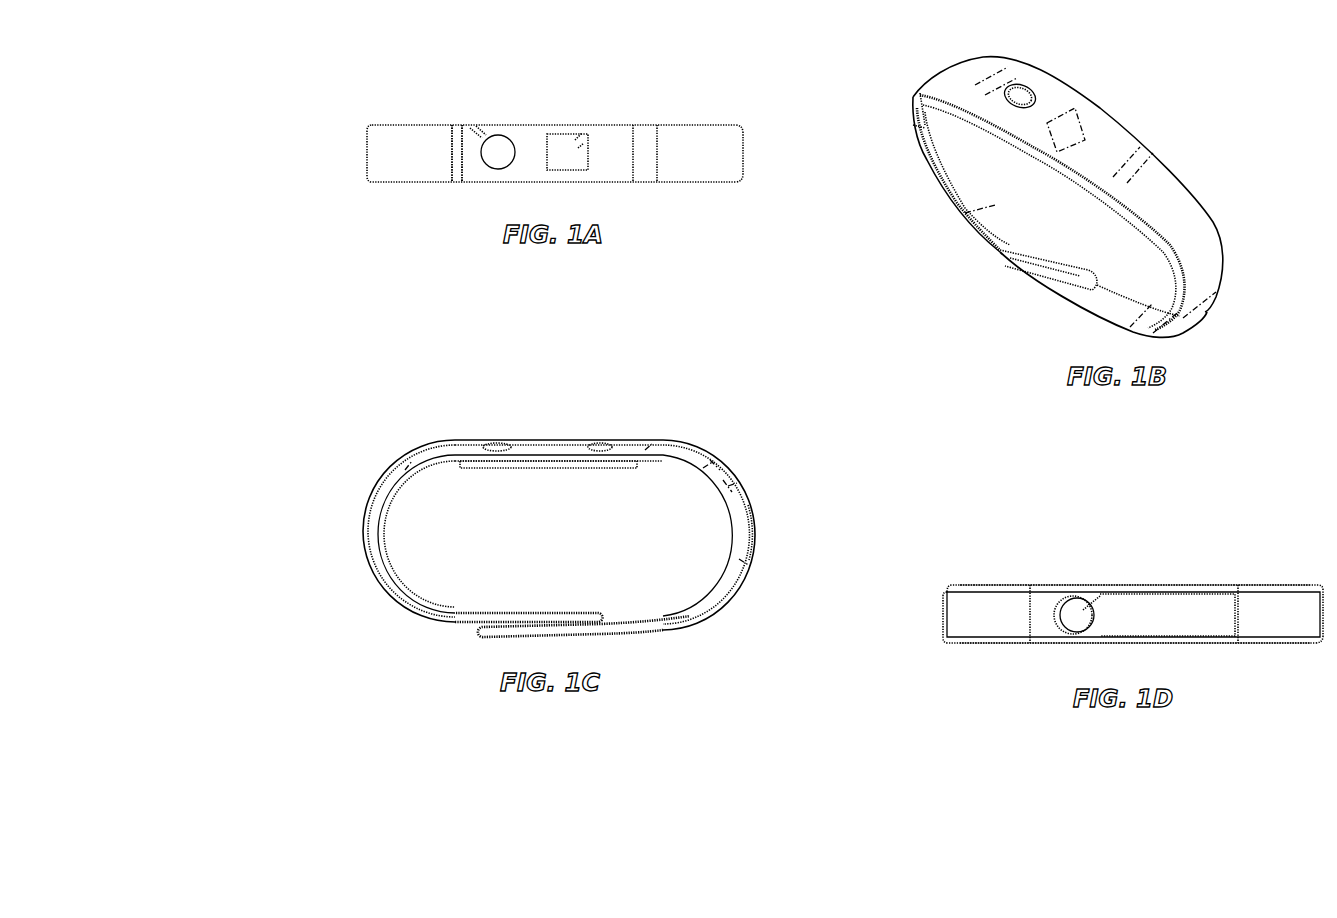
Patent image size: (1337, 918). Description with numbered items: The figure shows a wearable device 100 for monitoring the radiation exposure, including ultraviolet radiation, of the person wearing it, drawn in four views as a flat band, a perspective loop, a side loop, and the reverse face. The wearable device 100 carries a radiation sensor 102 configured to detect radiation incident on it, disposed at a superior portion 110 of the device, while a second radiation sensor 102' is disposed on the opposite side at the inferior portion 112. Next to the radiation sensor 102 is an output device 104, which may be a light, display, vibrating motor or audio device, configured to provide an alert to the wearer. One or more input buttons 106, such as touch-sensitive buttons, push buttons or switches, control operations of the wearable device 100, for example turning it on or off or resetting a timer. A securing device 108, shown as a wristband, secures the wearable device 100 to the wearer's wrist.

In FIG. 1A, the wearable device 100 is at (367, 146).
In FIG. 1B, the wearable device 100 is at (913, 108).
In FIG. 1C, the wearable device 100 is at (364, 541).
In FIG. 1D, the wearable device 100 is at (943, 612).
In FIG. 1A, the radiation sensor 102 is at (462, 96).
In FIG. 1B, the radiation sensor 102 is at (1092, 71).
In FIG. 1D, the second radiation sensor 102' is at (1044, 560).
In FIG. 1A, the output device 104 is at (567, 134).
In FIG. 1B, the output device 104 is at (1077, 127).
In FIG. 1C, the input buttons 106 is at (598, 445).
In FIG. 1C, the securing device 108 is at (757, 520).
In FIG. 1A, the superior portion 110 is at (473, 172).
In FIG. 1D, the inferior portion 112 is at (1177, 613).